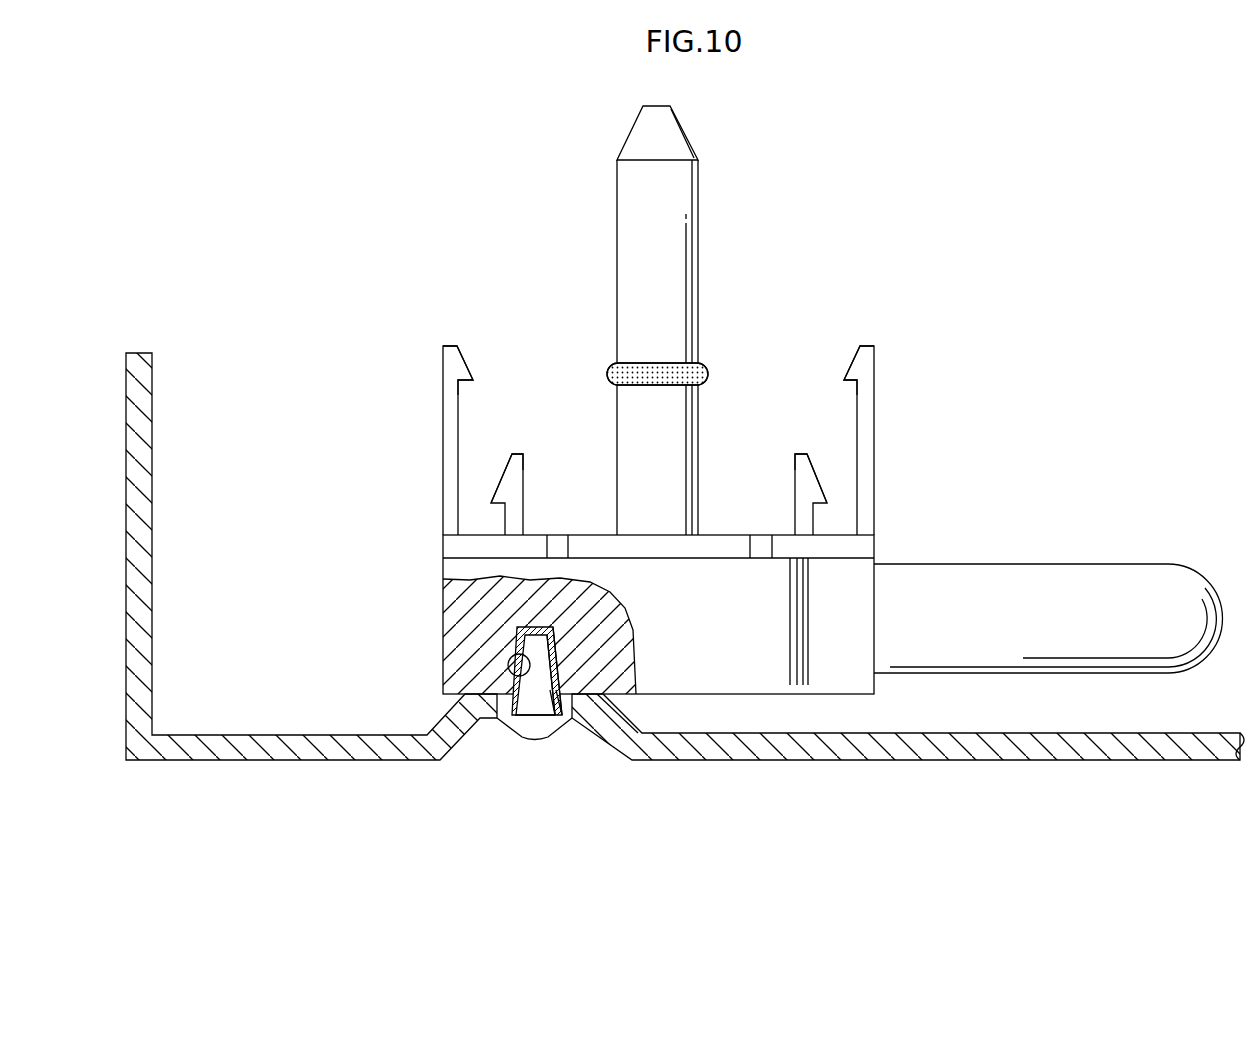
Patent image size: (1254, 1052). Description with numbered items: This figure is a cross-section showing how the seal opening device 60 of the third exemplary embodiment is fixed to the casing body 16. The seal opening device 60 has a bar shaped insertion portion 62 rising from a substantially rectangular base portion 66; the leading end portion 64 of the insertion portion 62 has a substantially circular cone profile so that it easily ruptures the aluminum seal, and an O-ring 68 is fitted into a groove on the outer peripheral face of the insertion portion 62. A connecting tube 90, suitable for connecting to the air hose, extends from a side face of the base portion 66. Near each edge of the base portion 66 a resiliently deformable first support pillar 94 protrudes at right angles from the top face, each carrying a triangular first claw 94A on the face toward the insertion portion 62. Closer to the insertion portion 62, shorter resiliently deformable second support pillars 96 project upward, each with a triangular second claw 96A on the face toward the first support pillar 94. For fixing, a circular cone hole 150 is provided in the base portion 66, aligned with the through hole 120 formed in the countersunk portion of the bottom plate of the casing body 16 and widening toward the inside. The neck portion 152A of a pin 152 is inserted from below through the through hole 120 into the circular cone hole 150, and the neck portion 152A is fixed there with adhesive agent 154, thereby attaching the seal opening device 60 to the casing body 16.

The casing body 16 is at (283, 765).
The seal opening device 60 is at (332, 388).
The insertion portion 62 is at (700, 243).
The leading end portion 64 is at (684, 121).
The base portion 66 is at (441, 607).
The O-ring 68 is at (710, 373).
The connecting tube 90 is at (1073, 576).
The first support pillar 94 is at (441, 452).
The first claw 94A is at (465, 357).
The second support pillar 96 is at (524, 516).
The second claw 96A is at (497, 480).
The through hole 120 is at (532, 716).
The circular cone hole 150 is at (510, 682).
The pin 152 is at (558, 722).
The neck portion 152A is at (560, 650).
The adhesive agent 154 is at (566, 678).